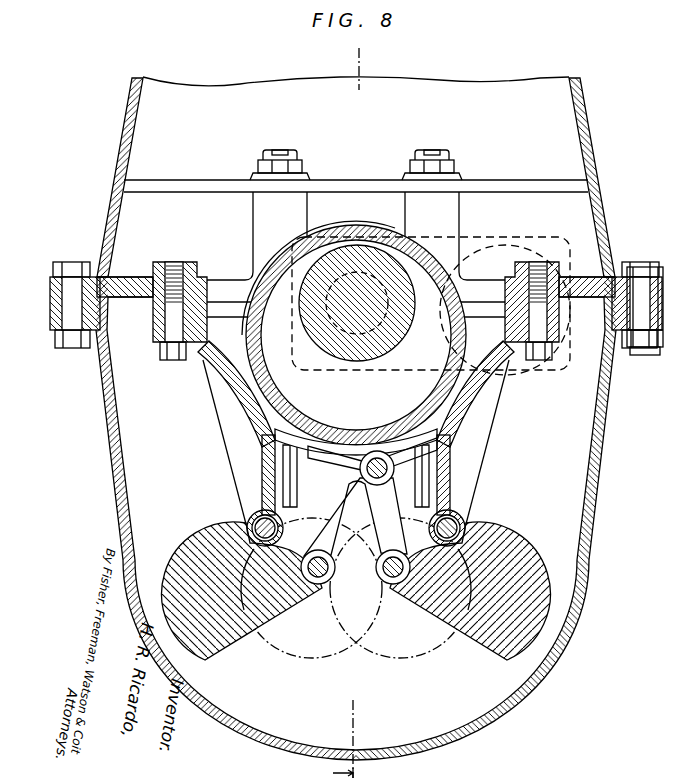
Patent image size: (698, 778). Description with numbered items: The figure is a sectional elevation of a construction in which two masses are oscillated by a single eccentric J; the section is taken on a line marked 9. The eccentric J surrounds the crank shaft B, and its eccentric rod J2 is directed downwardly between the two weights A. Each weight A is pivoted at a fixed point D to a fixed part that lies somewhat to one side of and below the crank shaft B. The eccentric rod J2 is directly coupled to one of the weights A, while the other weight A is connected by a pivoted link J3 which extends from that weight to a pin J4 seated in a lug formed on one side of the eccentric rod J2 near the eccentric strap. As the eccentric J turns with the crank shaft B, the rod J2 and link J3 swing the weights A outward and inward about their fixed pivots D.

The section line 9- 9 is at (361, 51).
The crank shaft B is at (360, 315).
The eccentric J is at (400, 363).
The eccentric rod J2 is at (313, 492).
The pivoted link J3 is at (387, 513).
The pin J4 is at (395, 467).
The pivot D is at (422, 528).
The weights A is at (190, 558).